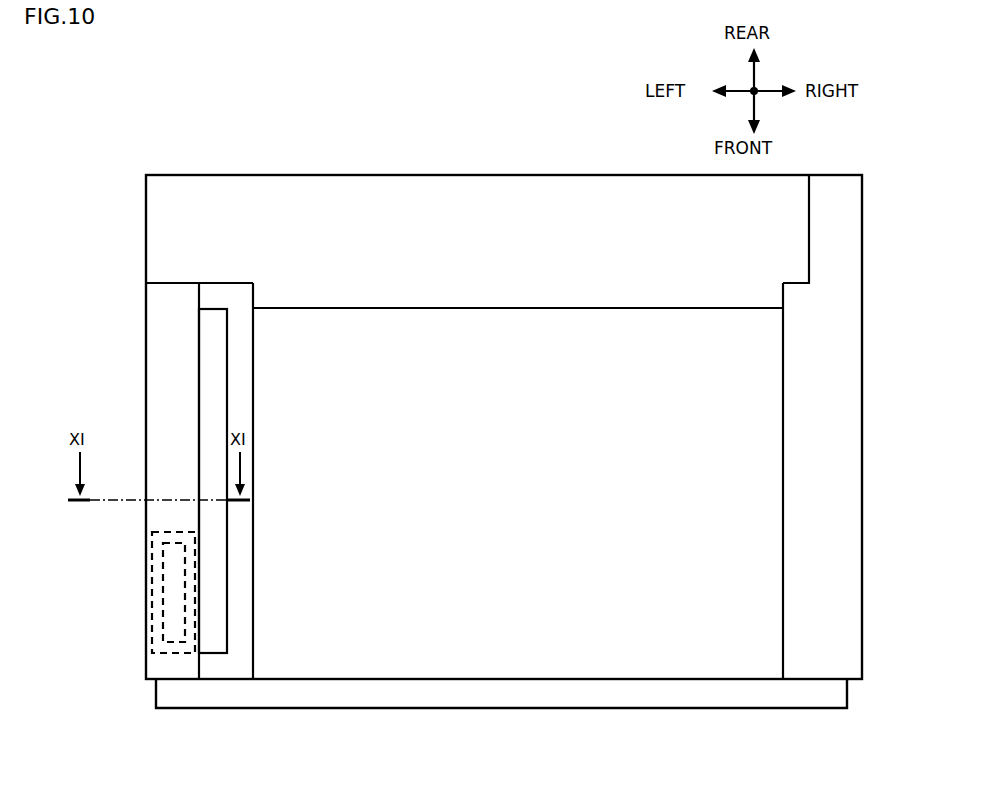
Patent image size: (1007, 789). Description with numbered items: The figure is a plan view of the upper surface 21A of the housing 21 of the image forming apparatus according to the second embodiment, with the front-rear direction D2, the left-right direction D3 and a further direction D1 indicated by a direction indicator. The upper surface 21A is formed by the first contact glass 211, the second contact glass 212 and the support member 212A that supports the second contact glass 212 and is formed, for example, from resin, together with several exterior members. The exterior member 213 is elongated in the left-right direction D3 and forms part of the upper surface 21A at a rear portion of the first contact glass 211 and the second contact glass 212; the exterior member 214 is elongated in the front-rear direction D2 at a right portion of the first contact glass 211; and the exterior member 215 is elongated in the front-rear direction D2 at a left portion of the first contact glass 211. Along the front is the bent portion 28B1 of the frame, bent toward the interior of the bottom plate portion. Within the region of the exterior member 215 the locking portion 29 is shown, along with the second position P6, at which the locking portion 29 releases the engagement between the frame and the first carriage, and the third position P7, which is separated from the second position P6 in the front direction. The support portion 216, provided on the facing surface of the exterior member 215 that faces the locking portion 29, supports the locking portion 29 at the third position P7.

The housing 21 is at (163, 136).
The upper surface 21A is at (163, 229).
The first contact glass 211 is at (518, 491).
The second contact glass 212 is at (214, 337).
The support member 212A is at (241, 296).
The exterior member 213 is at (519, 256).
The exterior member 214 is at (823, 458).
The exterior member 215 is at (170, 389).
The support portion 216 is at (175, 656).
The bent portion 28B1 is at (520, 691).
The locking portion 29 is at (183, 605).
The second position P6 is at (173, 494).
The third position P7 is at (172, 594).
The direction D1 is at (758, 94).
The front-rear direction D2 is at (752, 76).
The left-right direction D3 is at (740, 93).